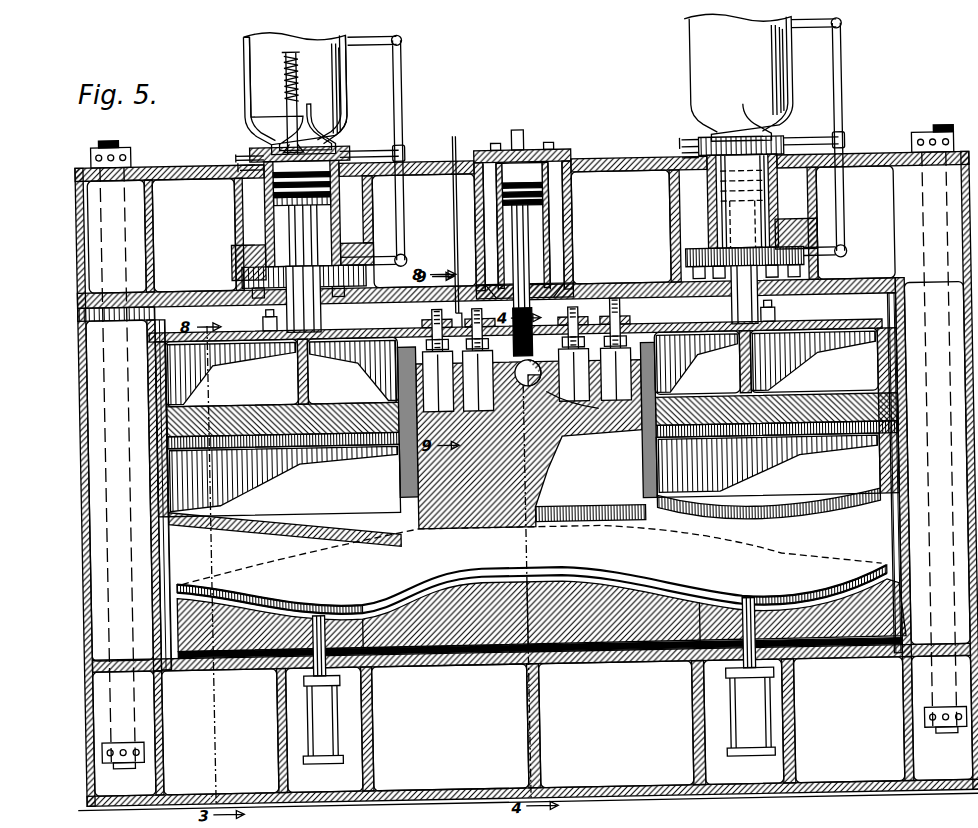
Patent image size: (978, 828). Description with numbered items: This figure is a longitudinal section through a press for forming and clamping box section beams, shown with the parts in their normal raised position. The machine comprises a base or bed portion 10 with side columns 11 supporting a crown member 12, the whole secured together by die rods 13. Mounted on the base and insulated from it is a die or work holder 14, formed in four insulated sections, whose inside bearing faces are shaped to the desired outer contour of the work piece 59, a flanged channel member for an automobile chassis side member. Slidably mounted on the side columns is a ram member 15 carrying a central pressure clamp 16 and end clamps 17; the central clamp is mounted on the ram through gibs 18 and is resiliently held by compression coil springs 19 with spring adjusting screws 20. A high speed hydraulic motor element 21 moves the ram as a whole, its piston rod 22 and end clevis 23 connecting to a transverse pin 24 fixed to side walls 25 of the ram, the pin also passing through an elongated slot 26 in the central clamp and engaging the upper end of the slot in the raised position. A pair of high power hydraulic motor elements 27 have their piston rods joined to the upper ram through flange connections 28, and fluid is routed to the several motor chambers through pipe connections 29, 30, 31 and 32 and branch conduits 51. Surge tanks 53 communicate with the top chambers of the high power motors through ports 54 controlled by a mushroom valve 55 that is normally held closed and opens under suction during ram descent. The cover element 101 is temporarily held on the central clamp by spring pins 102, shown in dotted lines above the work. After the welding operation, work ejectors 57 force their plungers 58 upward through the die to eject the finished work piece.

The base or bed portion 10 is at (535, 732).
The side columns 11 is at (82, 465).
The crown member 12 is at (80, 200).
The die rods 13 is at (108, 266).
The die or work holder 14 is at (465, 666).
The ram member 15 is at (168, 420).
The central pressure clamp 16 is at (513, 498).
The end clamps 17 is at (245, 522).
The gibs 18 is at (400, 477).
The compression coil springs 19 is at (445, 360).
The spring adjusting screws 20 is at (620, 311).
The high speed hydraulic motor element 21 is at (540, 216).
The piston rod 22 is at (528, 250).
The end clevis 23 is at (516, 348).
The transverse pin 24 is at (541, 364).
The side walls 25 is at (430, 330).
The elongated slot 26 is at (600, 410).
The high power hydraulic motor elements 27 is at (279, 219).
The flange connections 28 is at (260, 317).
The pipe connection 29 is at (530, 134).
The pipe connection 30 is at (246, 162).
The pipe connection 31 is at (459, 211).
The pipe connection 32 is at (400, 258).
The branch conduits 51 is at (248, 148).
The surge tanks 53 is at (256, 79).
The ports 54 is at (276, 146).
The mushroom valve 55 is at (305, 120).
The work ejectors 57 is at (334, 752).
The plungers 58 is at (303, 675).
The work piece 59 is at (283, 601).
The cover element 101 is at (792, 549).
The spring pins 102 is at (447, 514).